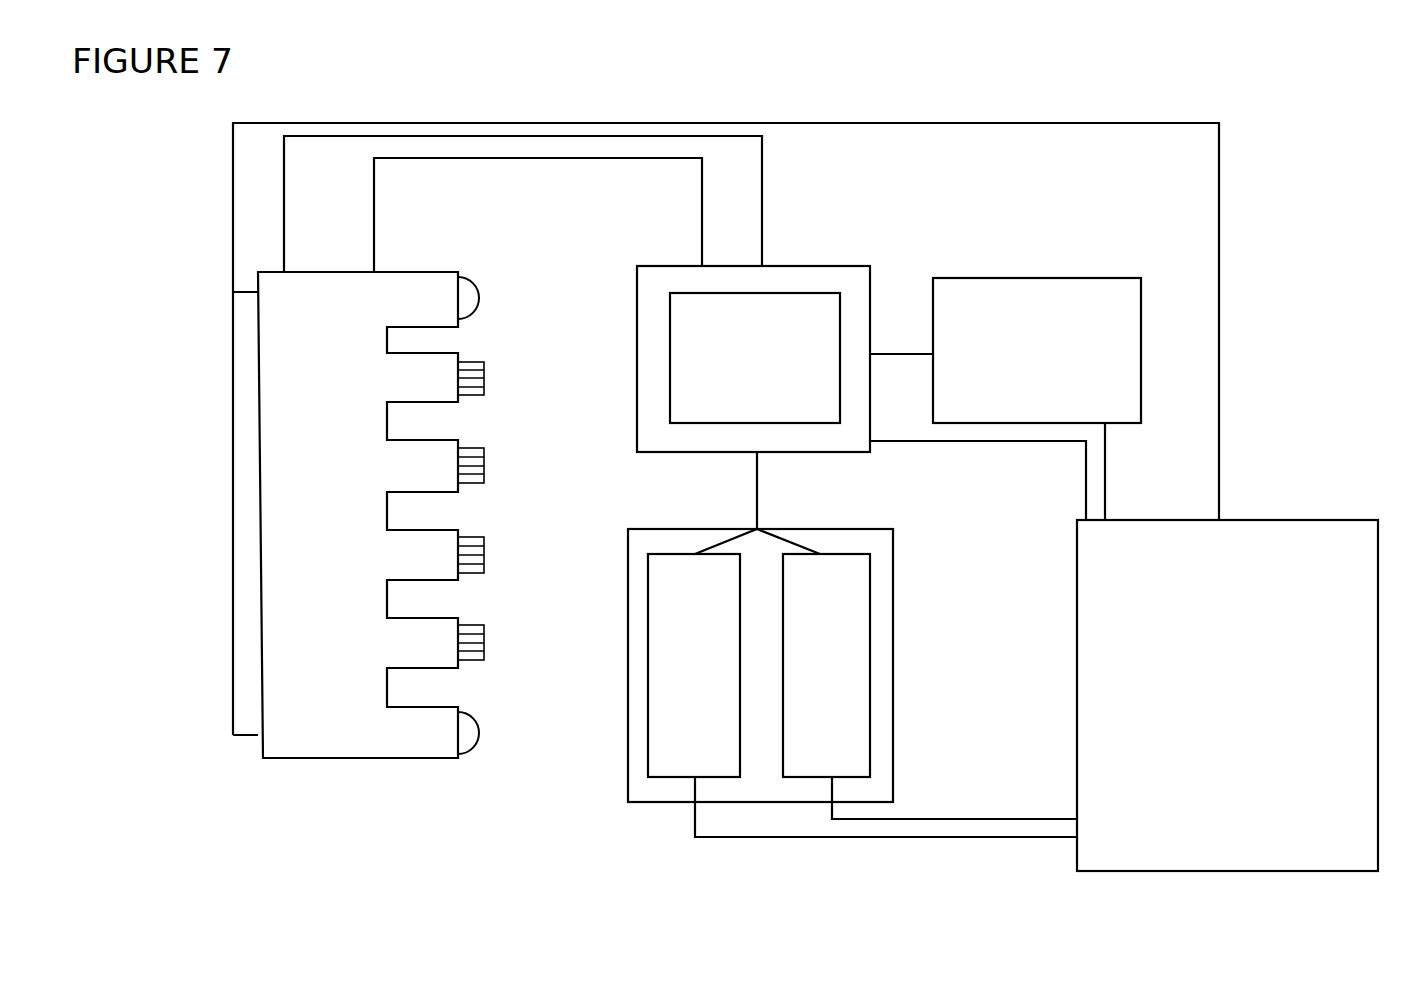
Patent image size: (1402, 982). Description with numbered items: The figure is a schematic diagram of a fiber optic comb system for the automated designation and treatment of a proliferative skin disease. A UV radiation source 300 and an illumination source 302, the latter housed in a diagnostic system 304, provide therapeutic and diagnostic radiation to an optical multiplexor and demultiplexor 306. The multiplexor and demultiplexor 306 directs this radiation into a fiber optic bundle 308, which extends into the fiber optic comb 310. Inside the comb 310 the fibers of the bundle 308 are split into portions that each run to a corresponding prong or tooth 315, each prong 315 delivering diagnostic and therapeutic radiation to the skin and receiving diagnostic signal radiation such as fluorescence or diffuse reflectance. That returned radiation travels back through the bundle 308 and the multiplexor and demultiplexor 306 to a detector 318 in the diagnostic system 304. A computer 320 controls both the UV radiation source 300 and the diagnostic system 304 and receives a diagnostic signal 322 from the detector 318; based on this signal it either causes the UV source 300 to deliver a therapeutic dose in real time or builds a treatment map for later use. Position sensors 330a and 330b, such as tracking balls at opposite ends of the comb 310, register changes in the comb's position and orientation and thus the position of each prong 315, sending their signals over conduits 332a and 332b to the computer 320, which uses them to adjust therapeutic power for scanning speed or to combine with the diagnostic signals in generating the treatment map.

The UV radiation source 300 is at (1035, 278).
The illumination source 302 is at (648, 604).
The diagnostic system 304 is at (893, 697).
The optical multiplexor and demultiplexor 306 is at (826, 266).
The fiber optic bundle 308 is at (720, 194).
The fiber optic comb 310 is at (288, 534).
The prong 315 is at (440, 393).
The detector 318 is at (870, 606).
The computer 320 is at (1235, 875).
The diagnostic signal 322 is at (985, 819).
The position sensor 330a is at (470, 755).
The position sensor 330b is at (464, 296).
The conduit 332a is at (250, 735).
The conduit 332b is at (233, 272).